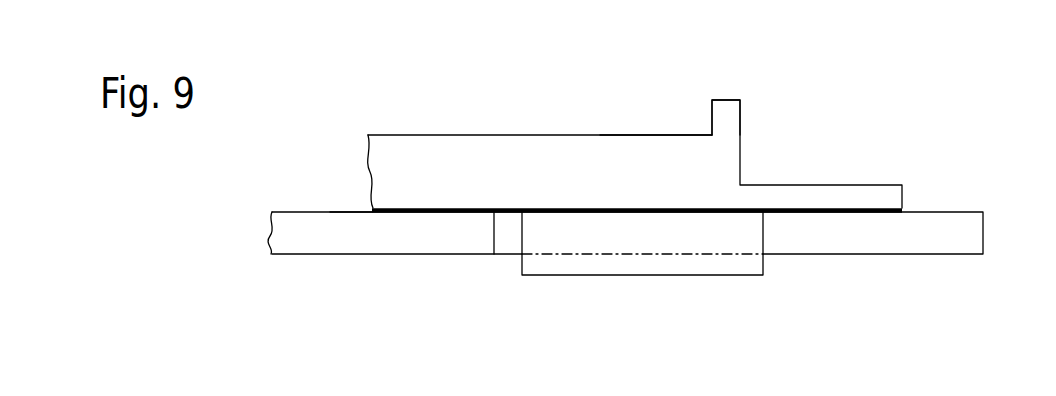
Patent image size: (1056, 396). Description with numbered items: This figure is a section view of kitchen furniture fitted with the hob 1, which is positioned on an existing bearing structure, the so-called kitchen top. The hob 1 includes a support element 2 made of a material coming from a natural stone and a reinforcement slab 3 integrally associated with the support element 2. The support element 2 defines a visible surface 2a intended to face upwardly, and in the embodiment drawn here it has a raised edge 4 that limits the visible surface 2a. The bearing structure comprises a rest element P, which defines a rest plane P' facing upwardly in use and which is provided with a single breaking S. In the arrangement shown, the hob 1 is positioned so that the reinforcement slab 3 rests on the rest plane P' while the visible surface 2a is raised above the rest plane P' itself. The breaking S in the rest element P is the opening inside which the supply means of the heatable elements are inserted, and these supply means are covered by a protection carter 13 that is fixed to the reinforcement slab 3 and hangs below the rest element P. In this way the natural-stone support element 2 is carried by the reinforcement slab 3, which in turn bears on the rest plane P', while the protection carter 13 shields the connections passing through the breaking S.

The hob 1 is at (635, 119).
The support element 2 is at (483, 168).
The visible surface 2a is at (643, 134).
The reinforcement slab 3 is at (429, 207).
The raised edge 4 is at (710, 119).
The protection carter 13 is at (618, 263).
The rest element P is at (590, 235).
The rest plane P' is at (306, 181).
The breaking S is at (507, 237).